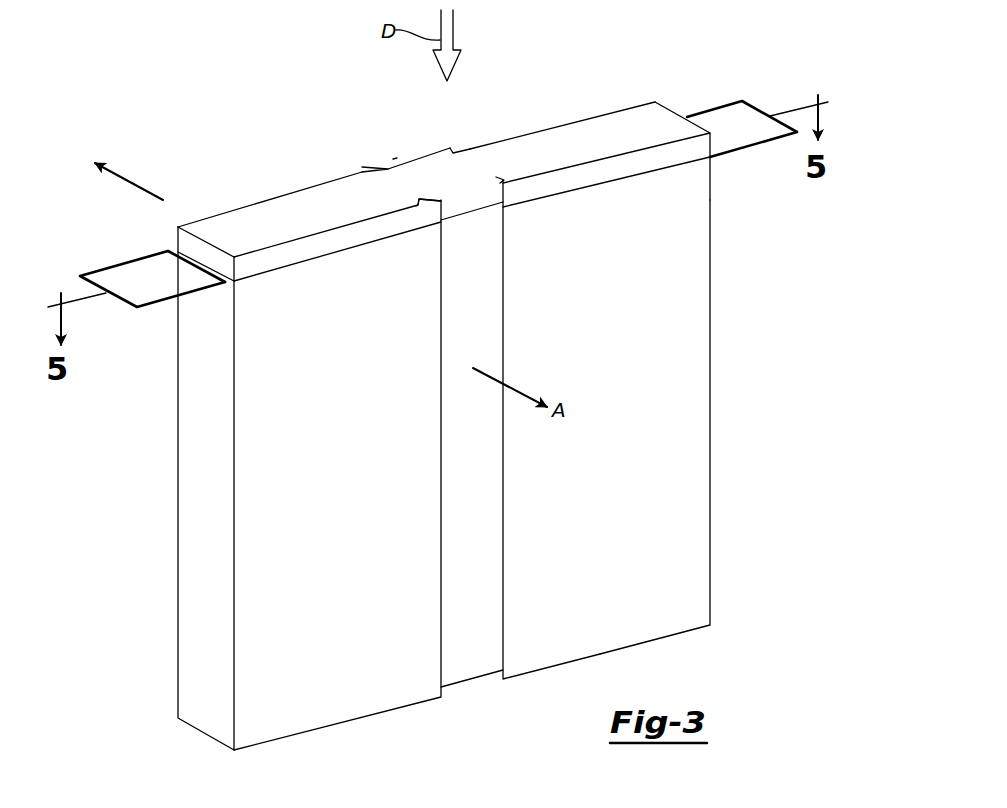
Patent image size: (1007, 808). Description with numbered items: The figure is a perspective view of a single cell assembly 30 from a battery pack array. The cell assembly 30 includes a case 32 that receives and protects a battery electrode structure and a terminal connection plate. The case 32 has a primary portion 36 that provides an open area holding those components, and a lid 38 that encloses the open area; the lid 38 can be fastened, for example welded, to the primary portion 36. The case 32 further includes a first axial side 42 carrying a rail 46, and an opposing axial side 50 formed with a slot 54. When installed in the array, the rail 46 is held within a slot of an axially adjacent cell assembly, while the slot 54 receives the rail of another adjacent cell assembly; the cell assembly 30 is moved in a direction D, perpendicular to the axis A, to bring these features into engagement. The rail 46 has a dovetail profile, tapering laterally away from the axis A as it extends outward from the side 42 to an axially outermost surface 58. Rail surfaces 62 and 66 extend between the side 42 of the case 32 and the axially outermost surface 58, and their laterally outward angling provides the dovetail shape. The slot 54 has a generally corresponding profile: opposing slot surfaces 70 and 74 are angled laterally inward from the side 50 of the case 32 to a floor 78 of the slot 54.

The cell assembly 30 is at (600, 77).
The case 32 is at (690, 585).
The primary portion 36 is at (690, 272).
The lid 38 is at (697, 151).
The first axial side 42 is at (280, 197).
The rail 46 is at (407, 163).
The opposing axial side 50 is at (617, 170).
The slot 54 is at (480, 313).
The axially outermost surface 58 is at (393, 157).
The rail surface 62 is at (360, 174).
The rail surface 66 is at (453, 147).
The slot surface 70 is at (424, 199).
The slot surface 74 is at (497, 178).
The floor 78 is at (462, 247).